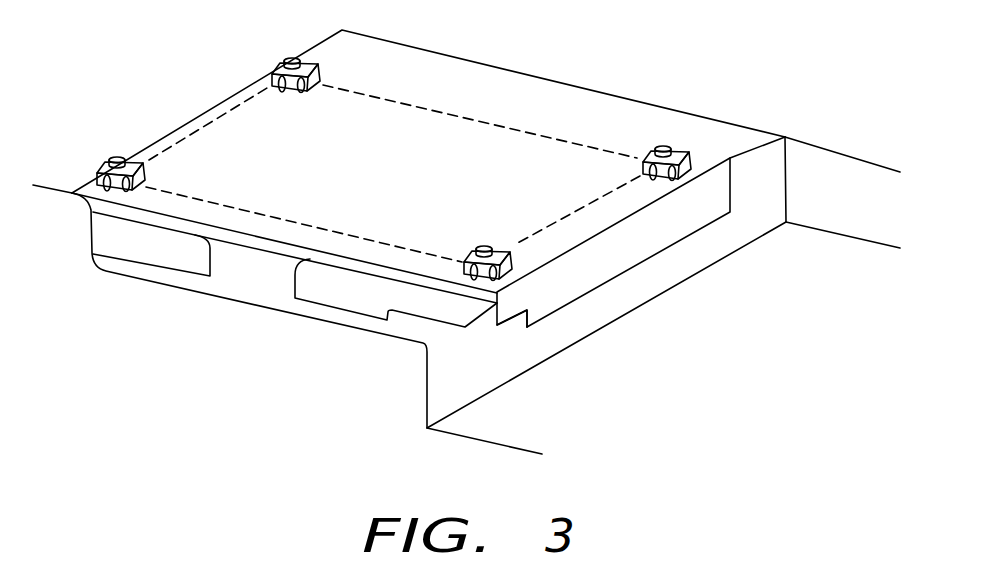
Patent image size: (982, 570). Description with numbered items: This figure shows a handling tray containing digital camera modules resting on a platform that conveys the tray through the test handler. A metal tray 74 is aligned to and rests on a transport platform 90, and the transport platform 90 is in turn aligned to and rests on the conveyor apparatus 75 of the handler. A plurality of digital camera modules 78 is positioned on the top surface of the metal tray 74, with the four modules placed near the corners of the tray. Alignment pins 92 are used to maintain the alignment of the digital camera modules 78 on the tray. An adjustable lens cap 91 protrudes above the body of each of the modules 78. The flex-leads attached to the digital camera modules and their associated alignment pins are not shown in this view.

The metal tray 74 is at (558, 82).
The conveyor apparatus 75 is at (802, 283).
The digital camera module 78 is at (105, 166).
The transport platform 90 is at (660, 277).
The adjustable lens cap 91 is at (117, 158).
The alignment pins 92 is at (514, 278).